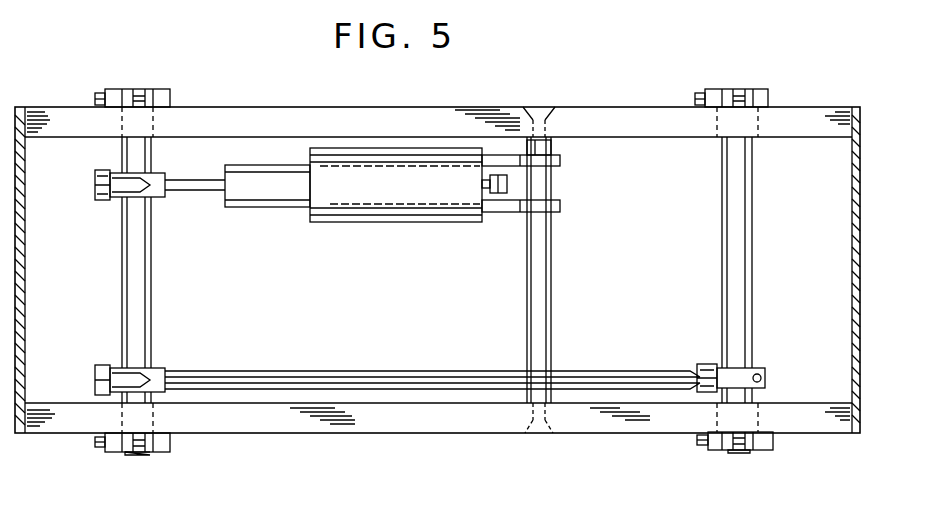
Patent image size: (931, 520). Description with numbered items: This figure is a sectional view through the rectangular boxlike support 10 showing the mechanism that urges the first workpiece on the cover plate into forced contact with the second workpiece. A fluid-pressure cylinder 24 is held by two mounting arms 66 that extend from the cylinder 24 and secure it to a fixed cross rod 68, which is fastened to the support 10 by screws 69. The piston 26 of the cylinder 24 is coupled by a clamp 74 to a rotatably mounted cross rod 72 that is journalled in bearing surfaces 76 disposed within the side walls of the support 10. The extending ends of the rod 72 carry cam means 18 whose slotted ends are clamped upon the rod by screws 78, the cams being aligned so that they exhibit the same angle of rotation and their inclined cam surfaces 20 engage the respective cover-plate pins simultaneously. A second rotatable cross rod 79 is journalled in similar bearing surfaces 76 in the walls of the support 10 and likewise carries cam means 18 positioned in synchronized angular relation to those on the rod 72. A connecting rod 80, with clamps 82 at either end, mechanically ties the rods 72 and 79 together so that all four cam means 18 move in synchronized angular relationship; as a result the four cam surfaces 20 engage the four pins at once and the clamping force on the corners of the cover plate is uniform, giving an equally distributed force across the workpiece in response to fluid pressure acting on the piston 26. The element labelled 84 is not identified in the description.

The support 10 is at (318, 112).
The cam means 18 is at (158, 95).
The cam surface 20 is at (124, 453).
The cylinder 24 is at (396, 192).
The piston 26 is at (265, 198).
The mounting arms 66 is at (561, 160).
The fixed cross rod 68 is at (540, 285).
The screws 69 is at (550, 106).
The rotatably mounted cross rod 72 is at (140, 316).
The clamp 74 is at (127, 198).
The bearing surfaces 76 is at (160, 125).
The screws 78 is at (97, 97).
The second rotatable cross rod 79 is at (726, 232).
The connecting rod 80 is at (386, 372).
The clamps 82 is at (103, 366).
The nut 84 is at (508, 184).